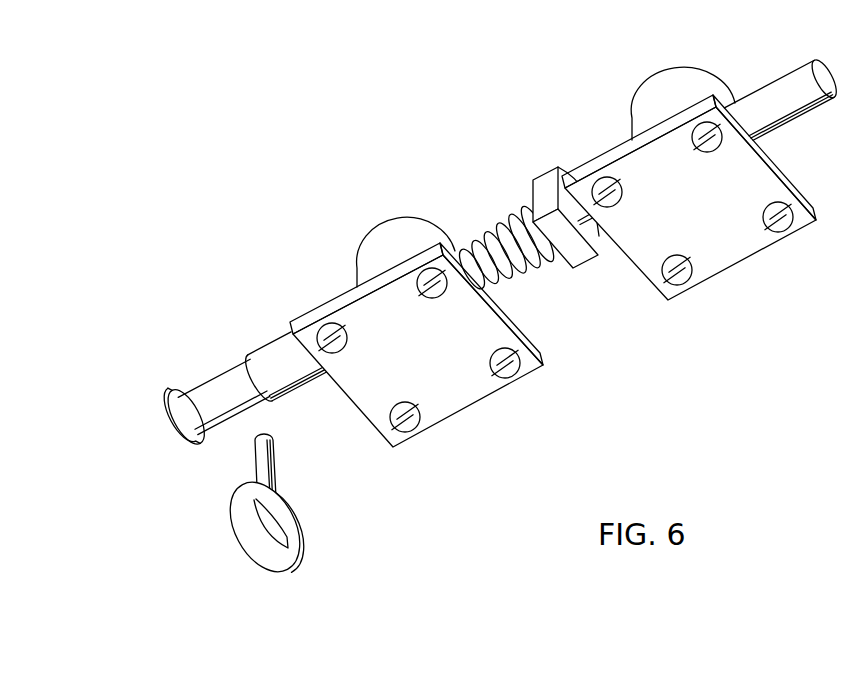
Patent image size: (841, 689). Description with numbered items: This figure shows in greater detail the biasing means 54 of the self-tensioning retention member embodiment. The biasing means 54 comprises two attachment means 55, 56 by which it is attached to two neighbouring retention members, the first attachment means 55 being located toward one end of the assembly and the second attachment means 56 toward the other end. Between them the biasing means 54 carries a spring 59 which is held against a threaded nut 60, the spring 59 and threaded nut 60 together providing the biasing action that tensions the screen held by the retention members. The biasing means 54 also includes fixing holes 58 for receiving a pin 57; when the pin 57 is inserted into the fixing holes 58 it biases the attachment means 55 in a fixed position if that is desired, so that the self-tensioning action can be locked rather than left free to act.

The biasing means 54 is at (310, 160).
The attachment means 55 is at (453, 403).
The attachment means 56 is at (738, 252).
The pin 57 is at (287, 552).
The fixing holes 58 is at (198, 402).
The spring 59 is at (485, 227).
The threaded nut 60 is at (551, 170).